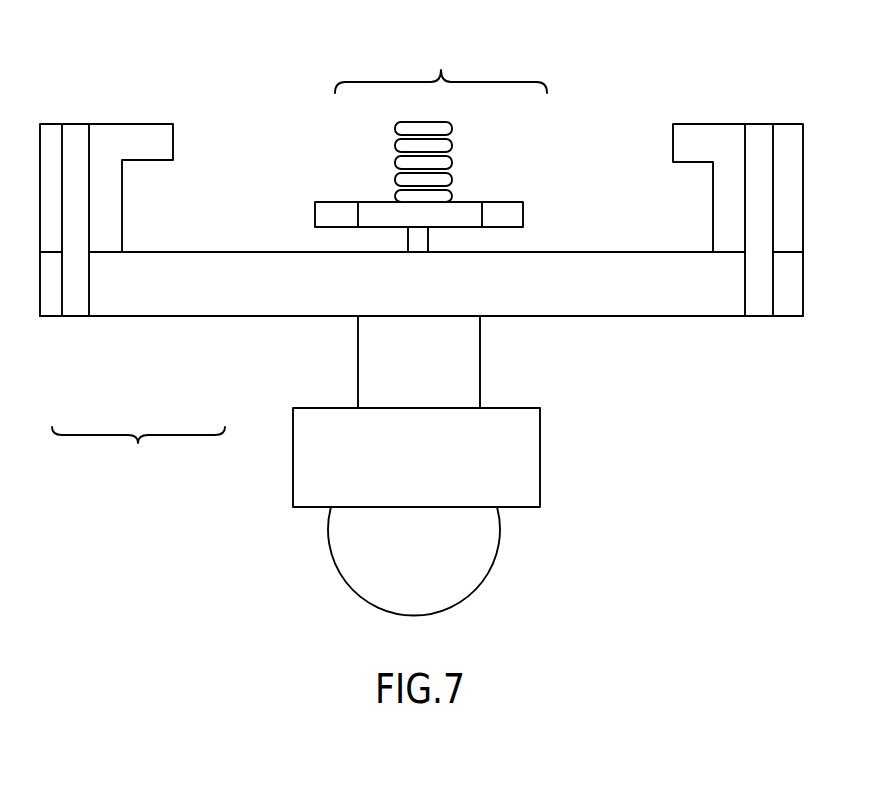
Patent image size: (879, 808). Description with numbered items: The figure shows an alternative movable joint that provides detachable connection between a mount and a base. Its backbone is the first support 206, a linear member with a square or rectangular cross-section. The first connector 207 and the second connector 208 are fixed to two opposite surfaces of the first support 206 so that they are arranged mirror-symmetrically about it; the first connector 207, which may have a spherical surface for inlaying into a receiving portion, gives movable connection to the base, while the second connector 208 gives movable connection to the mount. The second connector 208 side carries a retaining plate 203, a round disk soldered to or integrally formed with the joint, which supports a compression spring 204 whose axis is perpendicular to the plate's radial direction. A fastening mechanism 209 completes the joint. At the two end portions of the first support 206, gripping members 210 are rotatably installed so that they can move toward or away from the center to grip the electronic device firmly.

The retaining plate 203 is at (383, 233).
The compression spring 204 is at (407, 158).
The first support 206 is at (573, 300).
The first connector 207 is at (515, 493).
The second connector 208 is at (138, 458).
The fastening mechanism 209 is at (441, 65).
The gripping member 210 is at (127, 175).